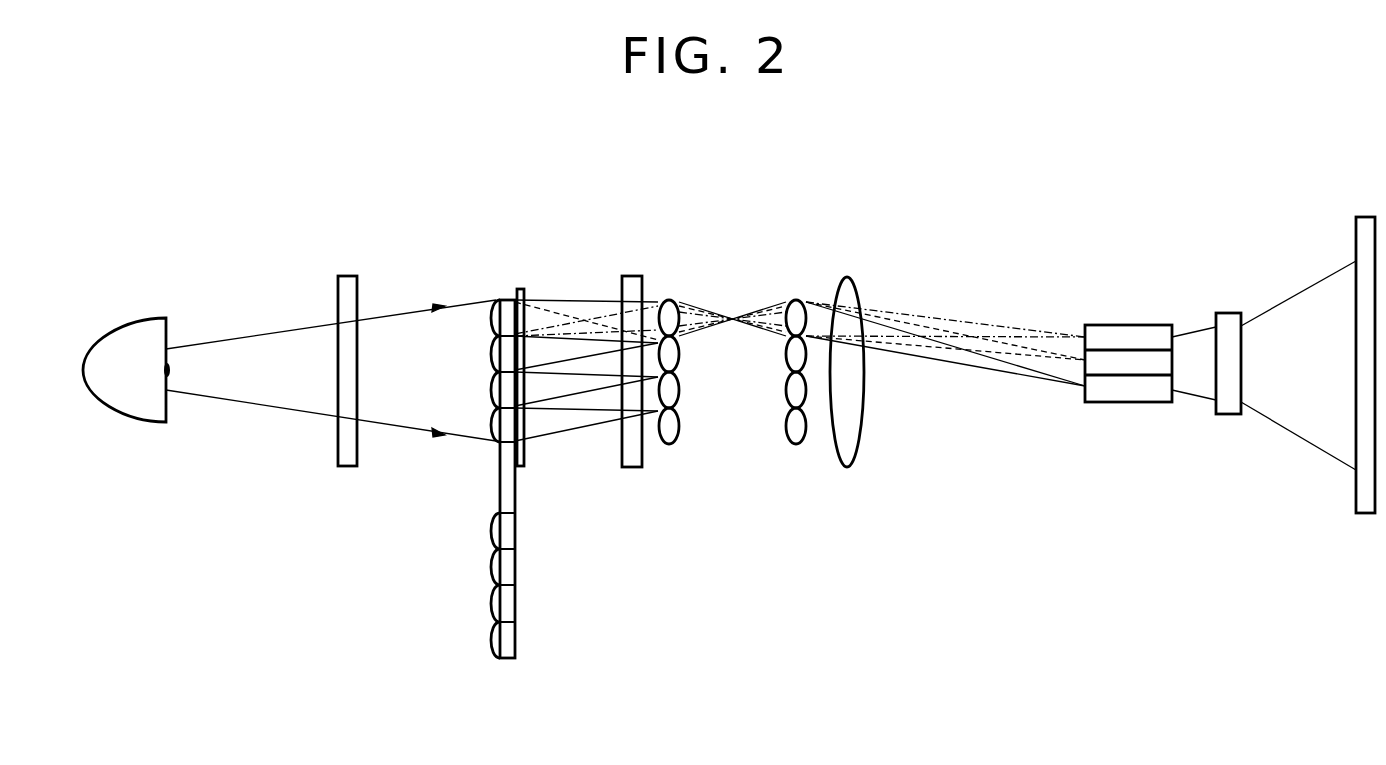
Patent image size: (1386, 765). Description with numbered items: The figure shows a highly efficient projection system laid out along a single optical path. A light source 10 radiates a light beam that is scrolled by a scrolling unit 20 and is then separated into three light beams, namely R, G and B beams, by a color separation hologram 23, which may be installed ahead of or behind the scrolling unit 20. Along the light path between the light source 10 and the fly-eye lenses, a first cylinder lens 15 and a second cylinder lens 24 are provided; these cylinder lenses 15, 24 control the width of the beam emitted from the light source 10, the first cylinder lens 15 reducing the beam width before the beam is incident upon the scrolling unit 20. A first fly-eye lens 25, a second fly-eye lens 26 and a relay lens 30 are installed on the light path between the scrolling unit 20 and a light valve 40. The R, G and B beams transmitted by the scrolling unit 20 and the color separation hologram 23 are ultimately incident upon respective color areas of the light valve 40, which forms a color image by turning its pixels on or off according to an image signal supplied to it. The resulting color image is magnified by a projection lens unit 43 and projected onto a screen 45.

The light source 10 is at (122, 318).
The first cylinder lens 15 is at (348, 276).
The scrolling unit 20 is at (497, 300).
The color separation hologram 23 is at (521, 289).
The second cylinder lens 24 is at (632, 276).
The first fly-eye lens 25 is at (669, 300).
The second fly-eye lens 26 is at (796, 300).
The relay lens 30 is at (846, 277).
The light valve 40 is at (1136, 325).
The projection lens unit 43 is at (1229, 313).
The screen 45 is at (1365, 217).